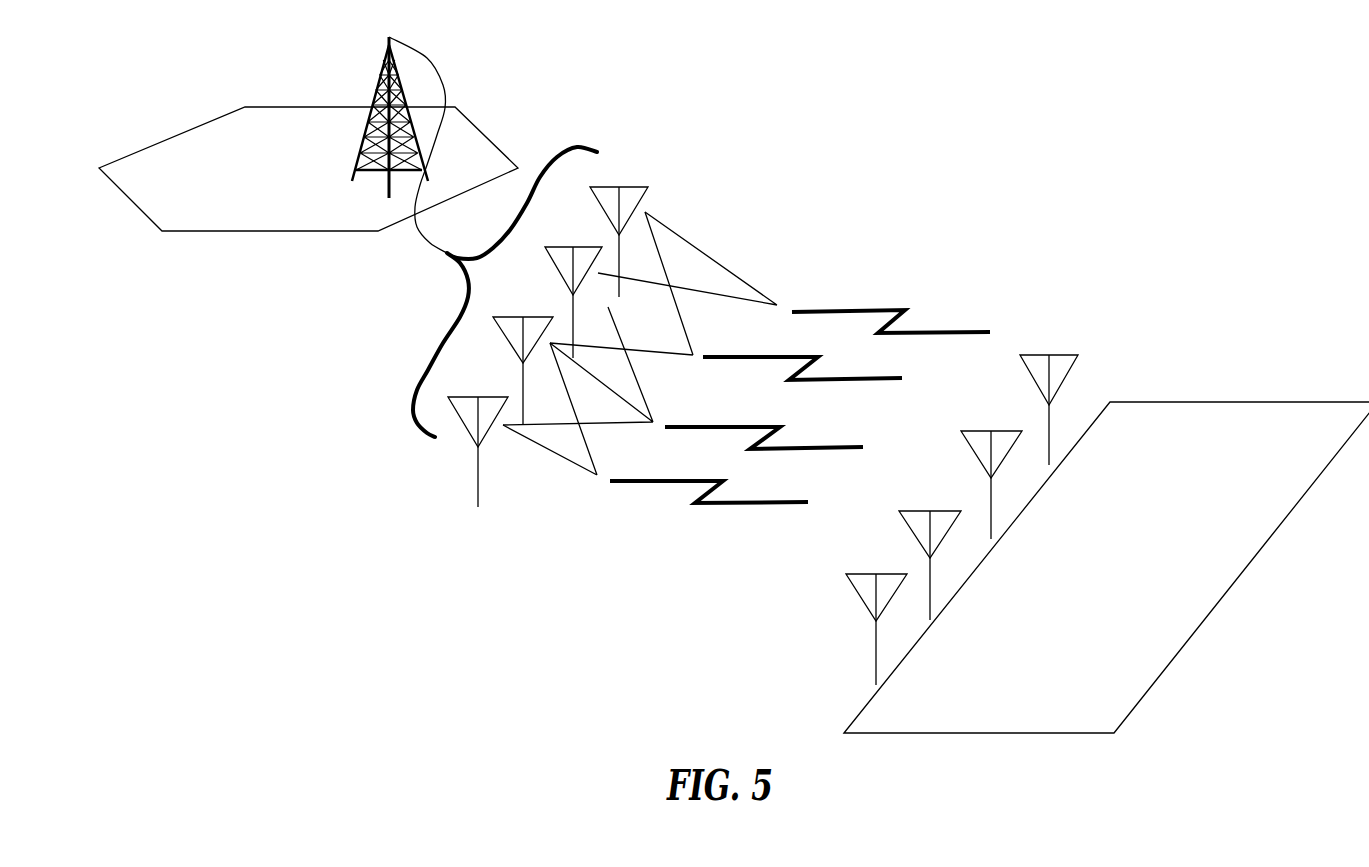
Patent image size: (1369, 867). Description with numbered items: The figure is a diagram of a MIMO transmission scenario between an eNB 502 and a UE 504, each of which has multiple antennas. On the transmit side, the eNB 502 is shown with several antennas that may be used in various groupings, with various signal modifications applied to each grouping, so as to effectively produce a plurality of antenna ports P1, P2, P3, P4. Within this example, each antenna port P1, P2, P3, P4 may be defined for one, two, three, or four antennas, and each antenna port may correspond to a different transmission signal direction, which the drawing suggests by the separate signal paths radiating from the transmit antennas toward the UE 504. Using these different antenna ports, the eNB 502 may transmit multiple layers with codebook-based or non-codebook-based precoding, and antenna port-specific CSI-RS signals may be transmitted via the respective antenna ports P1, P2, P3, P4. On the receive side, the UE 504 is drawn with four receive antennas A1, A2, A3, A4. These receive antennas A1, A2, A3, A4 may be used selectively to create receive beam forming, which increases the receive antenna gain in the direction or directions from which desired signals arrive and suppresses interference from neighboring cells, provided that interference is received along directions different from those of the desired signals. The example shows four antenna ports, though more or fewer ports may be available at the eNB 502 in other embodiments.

The eNB 502 is at (265, 218).
The UE 504 is at (1138, 552).
The antenna port P1 is at (790, 260).
The antenna port P2 is at (723, 296).
The antenna port P3 is at (678, 378).
The antenna port P4 is at (628, 425).
The receive antenna A1 is at (860, 629).
The receive antenna A2 is at (915, 565).
The receive antenna A3 is at (978, 485).
The receive antenna A4 is at (1037, 410).